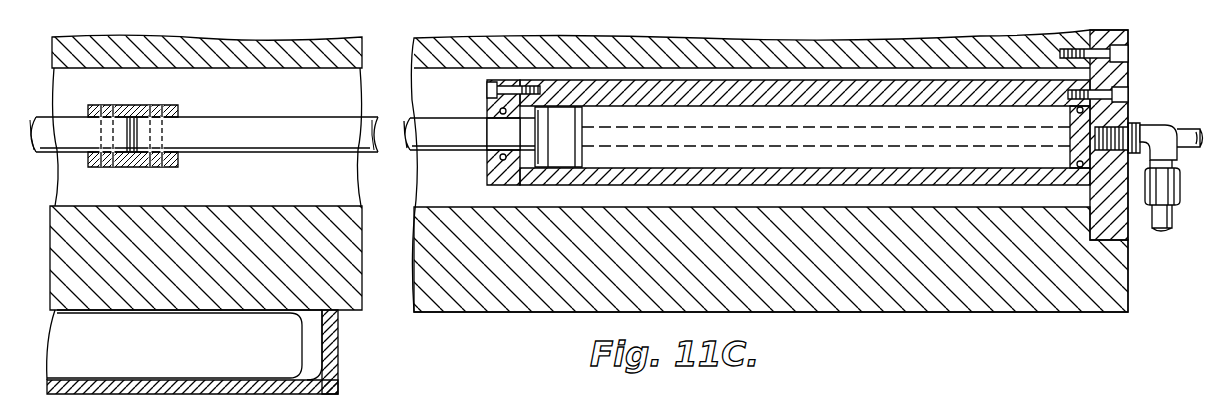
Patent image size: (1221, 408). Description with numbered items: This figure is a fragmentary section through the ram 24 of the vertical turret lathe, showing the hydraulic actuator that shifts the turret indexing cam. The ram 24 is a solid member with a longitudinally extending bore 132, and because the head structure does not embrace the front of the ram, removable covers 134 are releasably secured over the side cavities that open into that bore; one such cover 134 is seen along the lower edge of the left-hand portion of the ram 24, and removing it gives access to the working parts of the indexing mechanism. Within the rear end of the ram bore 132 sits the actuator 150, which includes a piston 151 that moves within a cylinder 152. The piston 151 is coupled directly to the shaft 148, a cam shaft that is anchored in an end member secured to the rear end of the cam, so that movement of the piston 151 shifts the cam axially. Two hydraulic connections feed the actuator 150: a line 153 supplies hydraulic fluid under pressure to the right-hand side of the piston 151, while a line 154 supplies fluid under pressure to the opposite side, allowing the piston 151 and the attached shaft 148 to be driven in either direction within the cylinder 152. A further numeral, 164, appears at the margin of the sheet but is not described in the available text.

The ram 24 is at (890, 288).
The bore 132 is at (850, 207).
The removable covers 134 is at (330, 368).
The shaft 148 is at (52, 142).
The actuator 150 is at (593, 192).
The piston 151 is at (362, 137).
The cylinder 152 is at (935, 178).
The line 153 is at (1158, 226).
The line 154 is at (1200, 110).
The member 164 is at (734, 400).